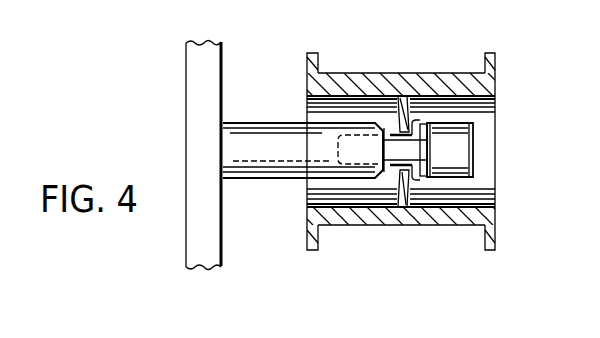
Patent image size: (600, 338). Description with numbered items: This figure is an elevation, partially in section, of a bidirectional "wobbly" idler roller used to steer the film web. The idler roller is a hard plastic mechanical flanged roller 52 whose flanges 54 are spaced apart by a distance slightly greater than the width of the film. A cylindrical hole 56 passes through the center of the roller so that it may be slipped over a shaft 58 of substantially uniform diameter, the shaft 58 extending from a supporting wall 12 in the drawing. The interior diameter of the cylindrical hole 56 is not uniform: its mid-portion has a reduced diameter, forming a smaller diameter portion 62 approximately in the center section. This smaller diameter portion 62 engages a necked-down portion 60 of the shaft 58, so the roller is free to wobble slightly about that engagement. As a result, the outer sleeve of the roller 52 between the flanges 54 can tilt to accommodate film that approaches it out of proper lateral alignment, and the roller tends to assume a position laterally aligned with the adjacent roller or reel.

The wall panel 12 is at (193, 123).
The flanged roller 52 is at (383, 68).
The flanges 54 is at (319, 62).
The cylindrical hole 56 is at (495, 112).
The shaft 58 is at (468, 153).
The necked-down portion 60 is at (413, 131).
The smaller diameter portion 62 is at (413, 172).